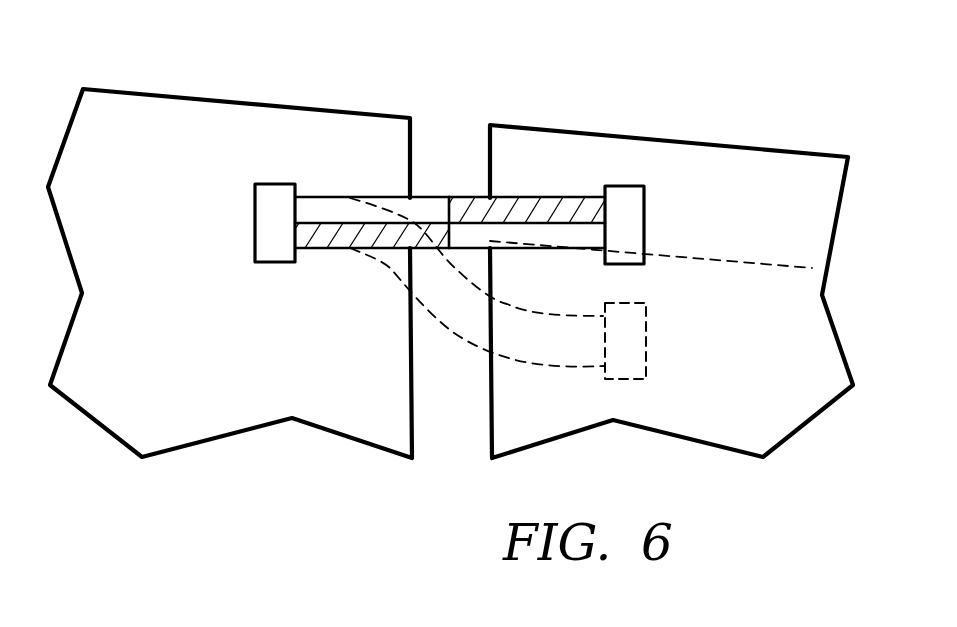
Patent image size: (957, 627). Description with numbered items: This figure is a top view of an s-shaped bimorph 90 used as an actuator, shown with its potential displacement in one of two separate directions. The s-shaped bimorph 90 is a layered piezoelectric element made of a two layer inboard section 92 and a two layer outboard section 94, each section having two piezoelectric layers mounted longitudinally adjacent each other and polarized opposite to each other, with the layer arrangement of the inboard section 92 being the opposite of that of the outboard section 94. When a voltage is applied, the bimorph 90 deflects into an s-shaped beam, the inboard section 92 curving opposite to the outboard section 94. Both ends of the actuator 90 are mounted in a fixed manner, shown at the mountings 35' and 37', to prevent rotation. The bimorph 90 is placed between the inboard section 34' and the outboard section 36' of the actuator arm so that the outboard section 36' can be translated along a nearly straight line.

The inboard section 34' is at (230, 245).
The outboard section 36' is at (671, 272).
The s-shaped bimorph 90 is at (493, 259).
The inboard section 92 is at (317, 197).
The outboard section 94 is at (545, 197).
The first washer / head 35' is at (234, 223).
The second washer / nut 37' is at (678, 282).